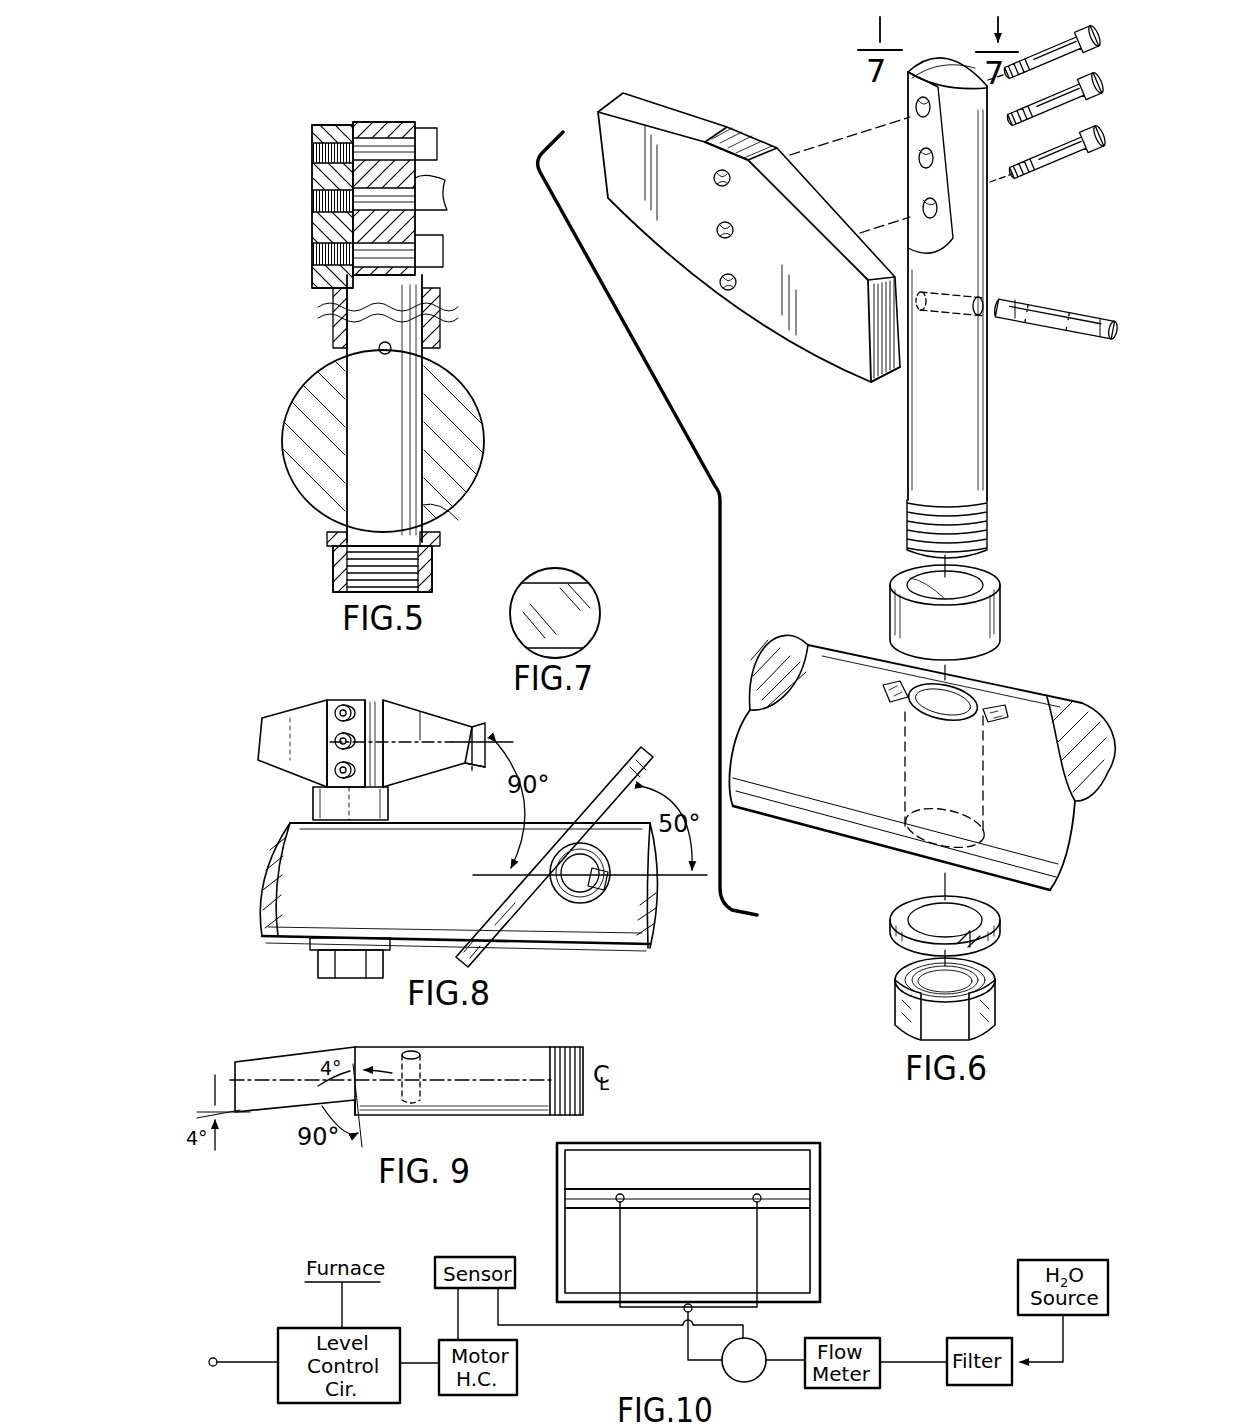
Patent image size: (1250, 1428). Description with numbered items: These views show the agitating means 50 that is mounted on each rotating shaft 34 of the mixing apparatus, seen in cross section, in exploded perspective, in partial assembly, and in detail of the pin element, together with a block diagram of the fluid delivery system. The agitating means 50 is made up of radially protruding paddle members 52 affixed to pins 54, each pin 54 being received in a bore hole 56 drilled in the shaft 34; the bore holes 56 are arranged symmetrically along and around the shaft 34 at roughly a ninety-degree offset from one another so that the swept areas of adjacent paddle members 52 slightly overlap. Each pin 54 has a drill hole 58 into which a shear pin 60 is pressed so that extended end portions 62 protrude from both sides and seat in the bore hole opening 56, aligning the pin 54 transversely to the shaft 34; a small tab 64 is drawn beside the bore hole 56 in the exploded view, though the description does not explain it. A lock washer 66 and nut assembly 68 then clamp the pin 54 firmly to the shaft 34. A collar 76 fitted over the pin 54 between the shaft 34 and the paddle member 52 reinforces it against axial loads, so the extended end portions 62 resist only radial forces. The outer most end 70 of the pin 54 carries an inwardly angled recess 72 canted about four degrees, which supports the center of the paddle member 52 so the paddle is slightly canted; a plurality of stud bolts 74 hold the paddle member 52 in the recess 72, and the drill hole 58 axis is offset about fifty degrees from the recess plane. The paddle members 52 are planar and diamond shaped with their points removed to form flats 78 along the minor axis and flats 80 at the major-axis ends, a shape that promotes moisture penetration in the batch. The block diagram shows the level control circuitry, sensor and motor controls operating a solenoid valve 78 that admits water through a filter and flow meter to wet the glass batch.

In FIG. 5, the shaft 34 is at (478, 448).
In FIG. 8, the shaft 34 is at (653, 934).
In FIG. 6, the shaft 34 is at (1078, 812).
In FIG. 5, the agitating means 50 is at (442, 118).
In FIG. 6, the agitating means 50 is at (1013, 47).
In FIG. 5, the paddle member 52 is at (333, 135).
In FIG. 8, the paddle member 52 is at (418, 712).
In FIG. 6, the paddle member 52 is at (775, 323).
In FIG. 5, the pin 54 is at (405, 280).
In FIG. 8, the pin 54 is at (375, 705).
In FIG. 6, the pin 54 is at (963, 432).
In FIG. 9, the pin 54 is at (492, 1057).
In FIG. 5, the bore hole 56 is at (430, 508).
In FIG. 8, the bore hole 56 is at (570, 900).
In FIG. 6, the bore hole 56 is at (963, 697).
In FIG. 6, the drill hole 58 is at (980, 300).
In FIG. 9, the drill hole 58 is at (410, 1055).
In FIG. 6, the shear pin 60 is at (1043, 322).
In FIG. 5, the extended end portions 62 is at (391, 345).
In FIG. 6, the extended end portions 62 is at (1003, 318).
In FIG. 6, the tab 64 is at (884, 688).
In FIG. 5, the lock washer 66 is at (328, 538).
In FIG. 8, the lock washer 66 is at (318, 942).
In FIG. 6, the lock washer 66 is at (1003, 926).
In FIG. 5, the nut assembly 68 is at (338, 568).
In FIG. 8, the nut assembly 68 is at (325, 970).
In FIG. 6, the nut assembly 68 is at (996, 1008).
In FIG. 5, the outer most end 70 is at (383, 124).
In FIG. 8, the outer most end 70 is at (311, 743).
In FIG. 6, the outer most end 70 is at (942, 66).
In FIG. 9, the outer most end 70 is at (237, 1072).
In FIG. 6, the inwardly angled recess 72 is at (922, 176).
In FIG. 5, the stud bolts 74 is at (418, 197).
In FIG. 8, the stud bolts 74 is at (340, 706).
In FIG. 6, the stud bolts 74 is at (1098, 128).
In FIG. 5, the collar 76 is at (340, 318).
In FIG. 8, the collar 76 is at (328, 800).
In FIG. 6, the collar 76 is at (1000, 588).
In FIG. 5, the flats 78 is at (325, 128).
In FIG. 6, the flats 78 is at (742, 138).
In FIG. 10, the flats 78 is at (752, 1378).
In FIG. 8, the flats 80 is at (478, 768).
In FIG. 6, the flats 80 is at (892, 368).